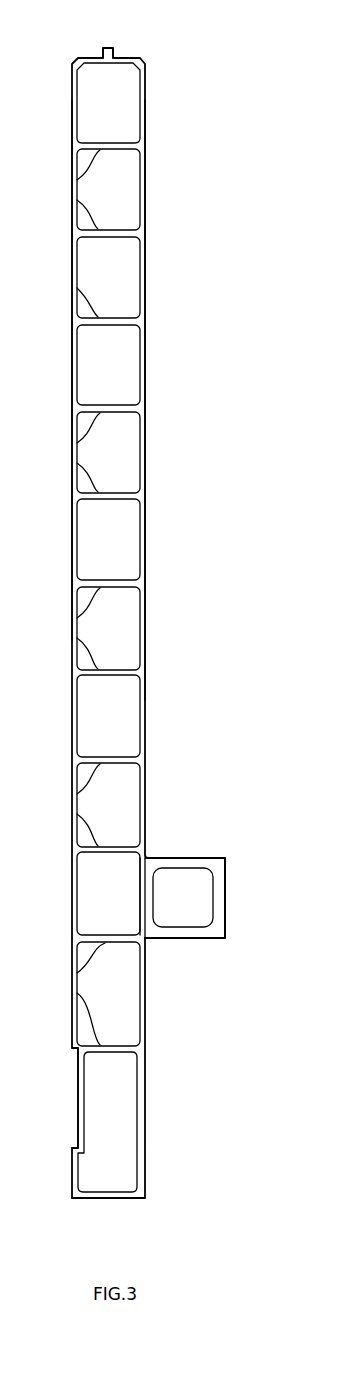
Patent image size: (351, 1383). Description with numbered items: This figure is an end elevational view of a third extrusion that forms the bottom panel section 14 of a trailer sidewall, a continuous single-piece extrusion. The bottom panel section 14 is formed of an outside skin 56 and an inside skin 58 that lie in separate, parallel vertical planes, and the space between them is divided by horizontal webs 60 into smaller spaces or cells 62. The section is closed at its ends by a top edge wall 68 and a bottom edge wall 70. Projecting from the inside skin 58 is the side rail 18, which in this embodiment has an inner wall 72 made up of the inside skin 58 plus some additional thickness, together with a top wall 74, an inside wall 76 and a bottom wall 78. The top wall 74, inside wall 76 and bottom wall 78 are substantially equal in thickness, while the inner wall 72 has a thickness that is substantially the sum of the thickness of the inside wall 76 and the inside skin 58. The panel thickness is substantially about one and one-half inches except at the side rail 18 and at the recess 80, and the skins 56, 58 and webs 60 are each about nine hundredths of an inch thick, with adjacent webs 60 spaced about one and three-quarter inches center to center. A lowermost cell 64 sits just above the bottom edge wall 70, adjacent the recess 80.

The bottom panel section 14 is at (180, 571).
The side rail 18 is at (201, 840).
The outside skin 56 is at (72, 369).
The inside skin 58 is at (145, 437).
The horizontal webs 60 is at (77, 200).
The cells 62 is at (130, 162).
The bottom cell 64 is at (125, 1125).
The top edge wall 68 is at (86, 57).
The bottom edge wall 70 is at (110, 1200).
The inner wall 72 is at (143, 890).
The top wall 74 is at (172, 857).
The inside wall 76 is at (217, 893).
The bottom wall 78 is at (187, 939).
The recess 80 is at (78, 1097).